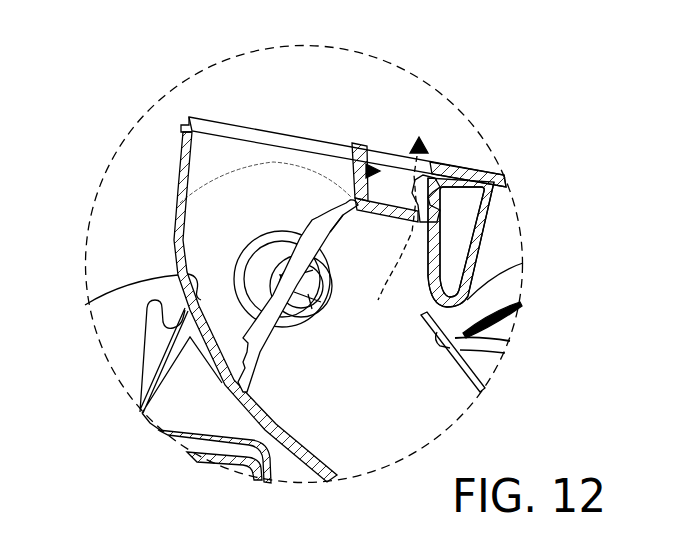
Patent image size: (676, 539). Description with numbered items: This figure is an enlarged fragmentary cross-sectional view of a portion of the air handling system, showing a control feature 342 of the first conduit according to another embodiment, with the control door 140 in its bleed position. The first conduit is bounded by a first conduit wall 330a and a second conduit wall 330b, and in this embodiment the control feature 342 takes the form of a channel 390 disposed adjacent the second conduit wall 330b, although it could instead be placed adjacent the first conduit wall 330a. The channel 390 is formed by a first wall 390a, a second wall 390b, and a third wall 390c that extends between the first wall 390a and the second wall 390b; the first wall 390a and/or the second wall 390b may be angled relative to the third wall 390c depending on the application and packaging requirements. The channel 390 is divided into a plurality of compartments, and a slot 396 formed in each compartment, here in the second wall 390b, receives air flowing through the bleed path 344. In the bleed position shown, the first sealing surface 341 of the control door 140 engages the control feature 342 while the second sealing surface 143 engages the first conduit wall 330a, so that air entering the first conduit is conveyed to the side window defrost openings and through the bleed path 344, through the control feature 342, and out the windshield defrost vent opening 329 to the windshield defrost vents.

The windshield defrost vent opening 329 is at (220, 123).
The first conduit wall 330a is at (176, 291).
The second conduit wall 330b is at (372, 228).
The control door 140 is at (320, 306).
The second sealing surface 143 is at (222, 412).
The first sealing surface 341 is at (352, 197).
The control feature 342 is at (378, 168).
The channel 390 is at (364, 111).
The first wall 390a is at (352, 197).
The second wall 390b is at (436, 182).
The third wall 390c is at (334, 214).
The bleed path 344 is at (378, 300).
The slot 396 is at (428, 225).